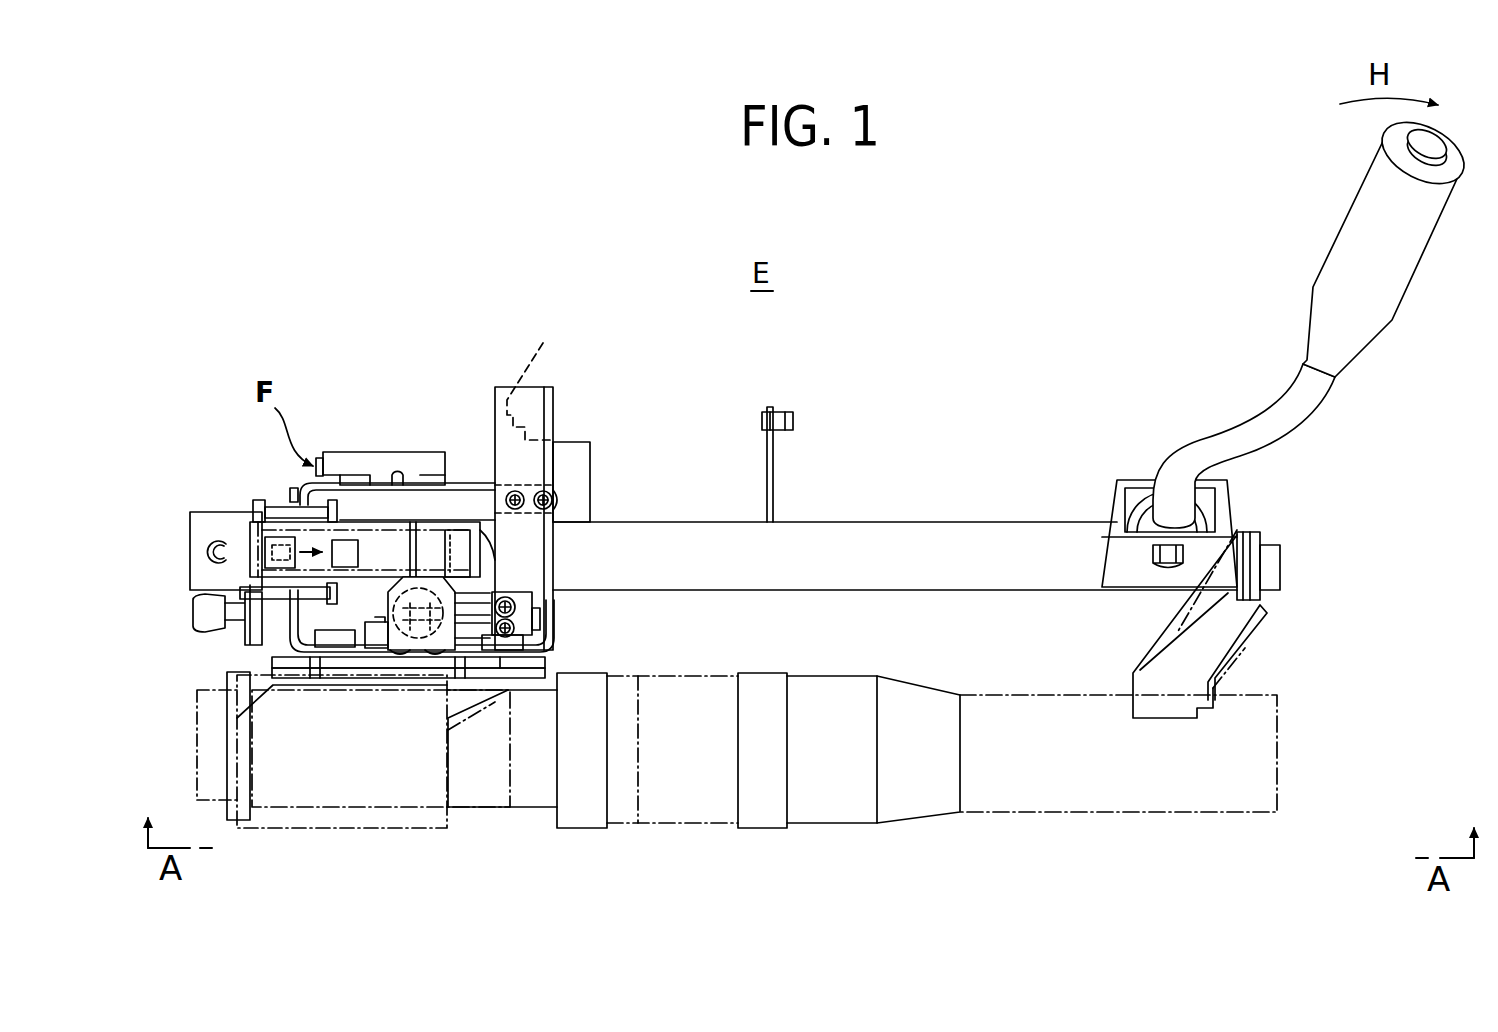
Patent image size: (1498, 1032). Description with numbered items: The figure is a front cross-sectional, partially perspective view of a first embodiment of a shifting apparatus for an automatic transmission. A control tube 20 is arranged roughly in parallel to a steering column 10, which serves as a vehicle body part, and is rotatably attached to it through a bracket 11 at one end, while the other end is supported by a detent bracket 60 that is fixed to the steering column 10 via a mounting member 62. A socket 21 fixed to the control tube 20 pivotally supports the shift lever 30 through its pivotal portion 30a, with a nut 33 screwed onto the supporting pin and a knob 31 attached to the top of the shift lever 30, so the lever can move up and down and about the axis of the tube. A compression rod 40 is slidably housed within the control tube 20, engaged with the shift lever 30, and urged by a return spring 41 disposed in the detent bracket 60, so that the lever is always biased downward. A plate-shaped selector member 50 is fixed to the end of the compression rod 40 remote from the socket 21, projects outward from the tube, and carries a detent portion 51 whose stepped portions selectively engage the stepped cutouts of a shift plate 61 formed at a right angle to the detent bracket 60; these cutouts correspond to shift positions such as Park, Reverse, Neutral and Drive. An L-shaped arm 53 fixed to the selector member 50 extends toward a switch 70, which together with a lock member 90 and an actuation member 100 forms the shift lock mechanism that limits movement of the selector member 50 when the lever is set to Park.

The steering column 10 is at (830, 826).
The bracket 11 is at (1243, 653).
The control tube 20 is at (968, 520).
The socket 21 is at (1240, 522).
The shift lever 30 is at (1237, 418).
The pivotal portion 30a is at (1197, 513).
The knob 31 is at (1425, 240).
The nut 33 is at (1167, 567).
The compression rod 40 is at (434, 530).
The return spring 41 is at (277, 603).
The selector member 50 is at (595, 500).
The detent portion 51 is at (534, 371).
The L-shaped arm 53 is at (462, 490).
The detent bracket 60 is at (282, 645).
The shift plate 61 is at (494, 390).
The mounting member 62 is at (448, 765).
The switch 70 is at (347, 452).
The lock member 90 is at (380, 634).
The actuation member 100 is at (550, 628).